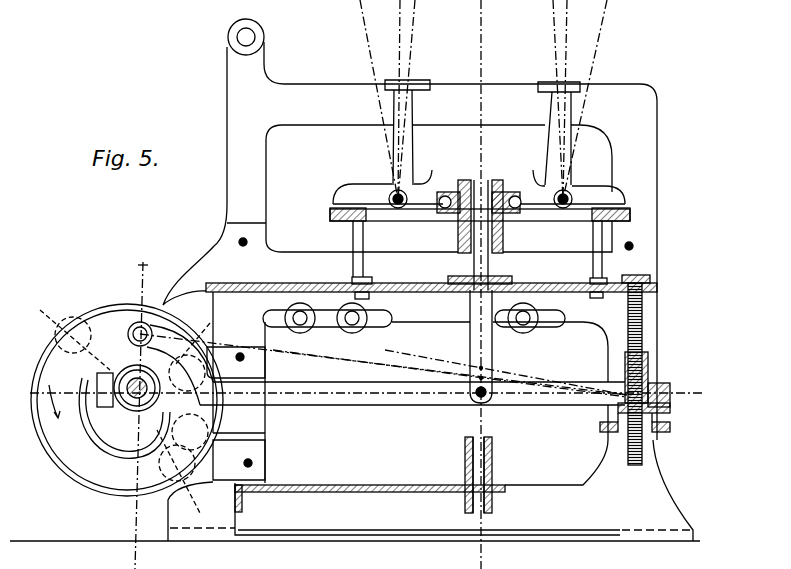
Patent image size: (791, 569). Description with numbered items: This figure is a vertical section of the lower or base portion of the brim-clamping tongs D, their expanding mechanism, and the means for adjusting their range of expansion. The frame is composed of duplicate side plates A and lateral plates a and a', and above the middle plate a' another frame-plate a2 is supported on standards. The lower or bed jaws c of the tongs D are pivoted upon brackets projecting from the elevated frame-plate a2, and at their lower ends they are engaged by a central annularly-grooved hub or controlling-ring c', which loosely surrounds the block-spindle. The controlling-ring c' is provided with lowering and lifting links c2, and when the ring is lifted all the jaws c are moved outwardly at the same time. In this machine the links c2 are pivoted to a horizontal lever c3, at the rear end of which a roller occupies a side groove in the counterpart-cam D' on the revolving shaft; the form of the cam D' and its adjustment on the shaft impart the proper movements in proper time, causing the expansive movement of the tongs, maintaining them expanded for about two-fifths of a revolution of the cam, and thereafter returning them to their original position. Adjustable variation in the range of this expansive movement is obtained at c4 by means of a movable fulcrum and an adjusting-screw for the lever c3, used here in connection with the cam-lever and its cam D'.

The side plate A is at (355, 280).
The brim-clamping tongs D is at (482, 124).
The lower or bed jaw c is at (479, 140).
The controlling-ring c' is at (479, 232).
The frame-plate a2 is at (470, 253).
The middle plate a' is at (431, 280).
The lowering and lifting links c2 is at (475, 346).
The horizontal lever c3 is at (412, 393).
The movable fulcrum and adjusting-screw c4 is at (650, 378).
The lateral plate a is at (370, 475).
The counterpart-cam D' is at (127, 399).